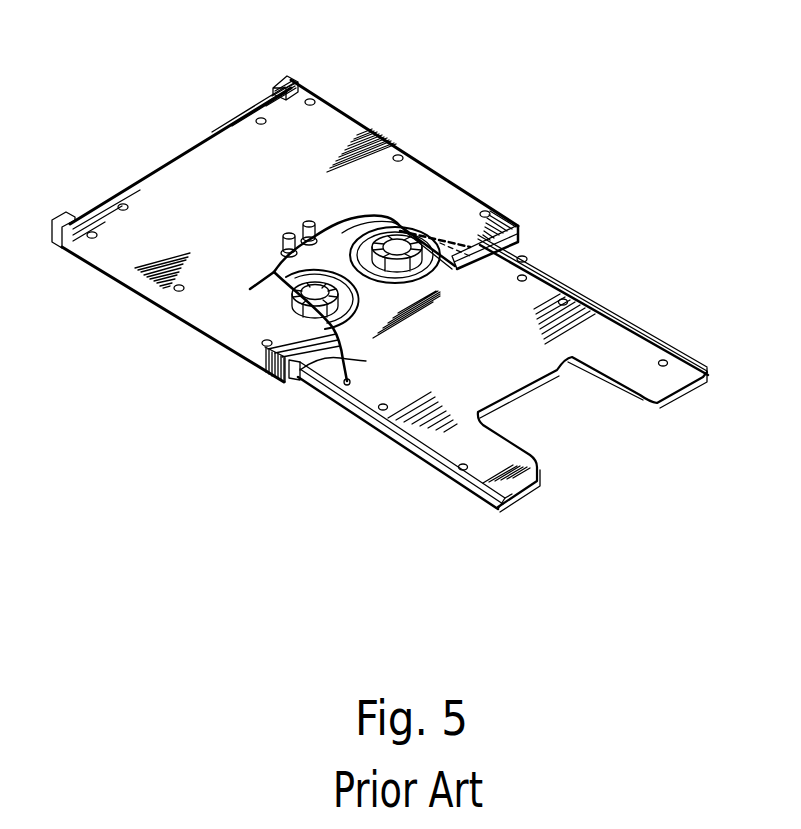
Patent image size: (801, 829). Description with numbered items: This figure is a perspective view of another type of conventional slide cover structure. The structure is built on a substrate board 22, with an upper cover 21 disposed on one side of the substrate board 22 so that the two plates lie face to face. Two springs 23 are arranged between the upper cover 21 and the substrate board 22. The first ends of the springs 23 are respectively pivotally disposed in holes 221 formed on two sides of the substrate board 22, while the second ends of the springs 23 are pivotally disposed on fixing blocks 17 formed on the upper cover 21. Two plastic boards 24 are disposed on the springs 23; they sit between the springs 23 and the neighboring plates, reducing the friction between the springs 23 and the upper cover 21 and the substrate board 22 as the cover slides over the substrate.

The fixing block 17 is at (308, 224).
The upper cover 21 is at (347, 122).
The substrate board 22 is at (653, 340).
The hole 221 is at (543, 270).
The spring 23 is at (517, 252).
The plastic board 24 is at (427, 232).